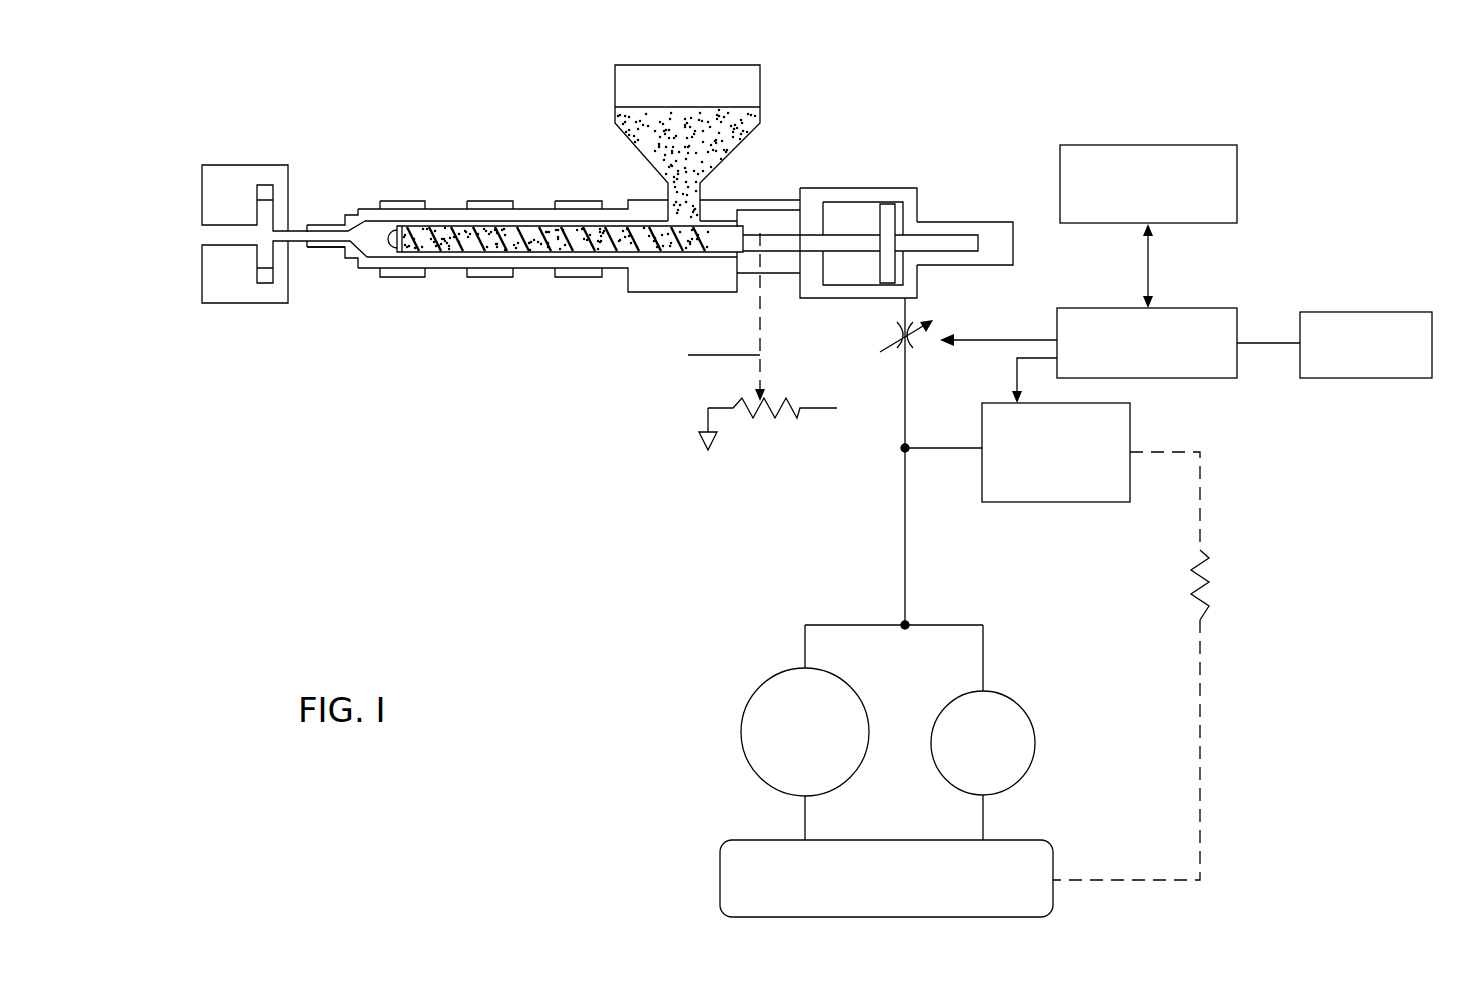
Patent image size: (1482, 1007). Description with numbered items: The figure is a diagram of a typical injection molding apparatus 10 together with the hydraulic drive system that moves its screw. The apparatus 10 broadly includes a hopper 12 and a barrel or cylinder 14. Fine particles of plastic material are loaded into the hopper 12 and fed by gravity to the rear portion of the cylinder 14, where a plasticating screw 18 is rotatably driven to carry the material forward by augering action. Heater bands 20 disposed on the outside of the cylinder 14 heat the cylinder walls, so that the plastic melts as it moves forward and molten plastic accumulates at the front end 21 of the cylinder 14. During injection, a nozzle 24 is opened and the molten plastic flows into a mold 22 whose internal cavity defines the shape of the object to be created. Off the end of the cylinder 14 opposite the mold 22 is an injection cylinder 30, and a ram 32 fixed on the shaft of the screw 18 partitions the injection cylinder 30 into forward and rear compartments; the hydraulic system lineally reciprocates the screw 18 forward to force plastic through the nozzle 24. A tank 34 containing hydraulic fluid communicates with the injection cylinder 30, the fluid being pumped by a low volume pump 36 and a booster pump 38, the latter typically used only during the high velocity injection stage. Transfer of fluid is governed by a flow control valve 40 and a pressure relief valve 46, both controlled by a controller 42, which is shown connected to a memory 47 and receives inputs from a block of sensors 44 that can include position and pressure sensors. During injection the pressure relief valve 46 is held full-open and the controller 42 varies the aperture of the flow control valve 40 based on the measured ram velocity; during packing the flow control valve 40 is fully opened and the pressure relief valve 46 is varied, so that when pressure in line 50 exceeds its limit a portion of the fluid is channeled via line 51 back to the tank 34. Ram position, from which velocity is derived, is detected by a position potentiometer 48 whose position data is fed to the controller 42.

The injection molding apparatus 10 is at (838, 92).
The hopper 12 is at (760, 82).
The barrel or cylinder 14 is at (440, 266).
The plasticating screw 18 is at (452, 224).
The heater bands 20 is at (385, 202).
The front end of the cylinder 21 is at (362, 236).
The mold 22 is at (225, 165).
The nozzle 24 is at (318, 248).
The injection cylinder 30 is at (840, 213).
The ram 32 is at (893, 222).
The tank 34 is at (755, 840).
The low volume pump 36 is at (1037, 733).
The booster pump 38 is at (742, 706).
The flow control valve 40 is at (895, 337).
The controller 42 is at (1197, 308).
The sensors 44 is at (1385, 378).
The pressure relief valve 46 is at (1030, 503).
The memory 47 is at (1237, 162).
The position potentiometer 48 is at (752, 412).
The line 50 is at (900, 456).
The line 51 is at (1203, 704).